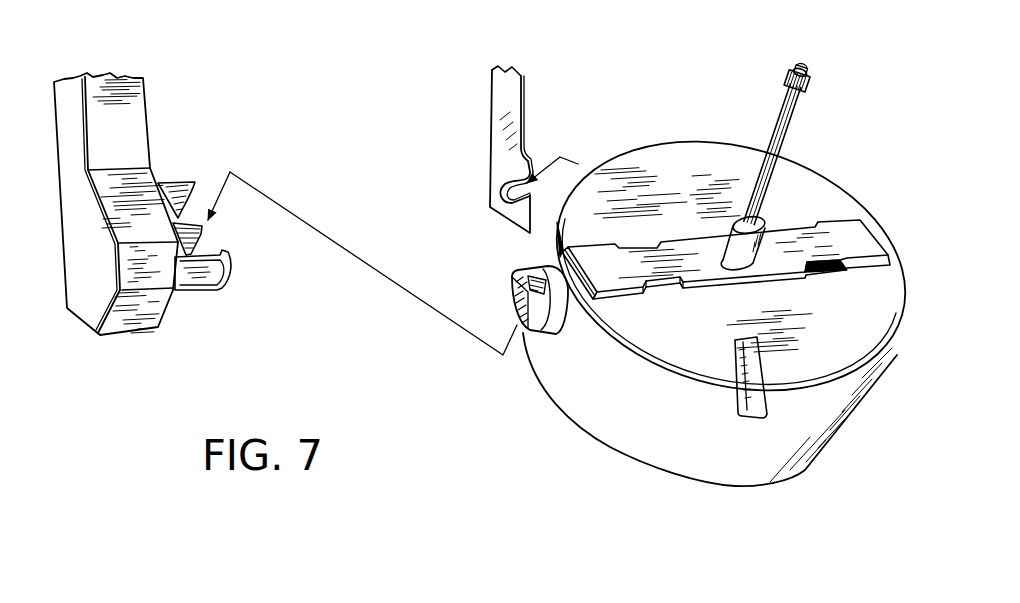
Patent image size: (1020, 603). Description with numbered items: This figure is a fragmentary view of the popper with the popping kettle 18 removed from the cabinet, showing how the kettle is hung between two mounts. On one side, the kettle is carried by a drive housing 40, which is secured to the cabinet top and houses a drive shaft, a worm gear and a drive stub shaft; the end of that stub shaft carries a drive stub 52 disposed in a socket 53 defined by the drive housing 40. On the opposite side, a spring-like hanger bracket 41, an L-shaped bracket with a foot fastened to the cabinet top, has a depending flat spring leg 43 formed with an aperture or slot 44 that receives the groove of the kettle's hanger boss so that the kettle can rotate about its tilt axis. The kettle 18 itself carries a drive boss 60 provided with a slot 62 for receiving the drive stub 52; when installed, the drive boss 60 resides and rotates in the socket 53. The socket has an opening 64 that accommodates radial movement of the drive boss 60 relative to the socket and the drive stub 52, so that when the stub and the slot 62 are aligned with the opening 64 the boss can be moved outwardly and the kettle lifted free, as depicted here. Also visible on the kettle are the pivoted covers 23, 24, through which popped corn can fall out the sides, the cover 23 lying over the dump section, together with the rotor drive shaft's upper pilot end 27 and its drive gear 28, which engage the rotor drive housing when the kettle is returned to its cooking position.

The popping kettle 18 is at (614, 452).
The cover 23 is at (809, 321).
The cover 24 is at (680, 202).
The upper pilot end 27 is at (809, 65).
The drive gear 28 is at (785, 78).
The drive housing 40 is at (128, 115).
The spring-like hanger bracket 41 is at (498, 110).
The flat spring leg 43 is at (530, 82).
The slot 44 is at (500, 200).
The drive stub 52 is at (202, 233).
The socket 53 is at (180, 192).
The drive boss 60 is at (506, 289).
The slot 62 is at (513, 293).
The opening 64 is at (195, 192).